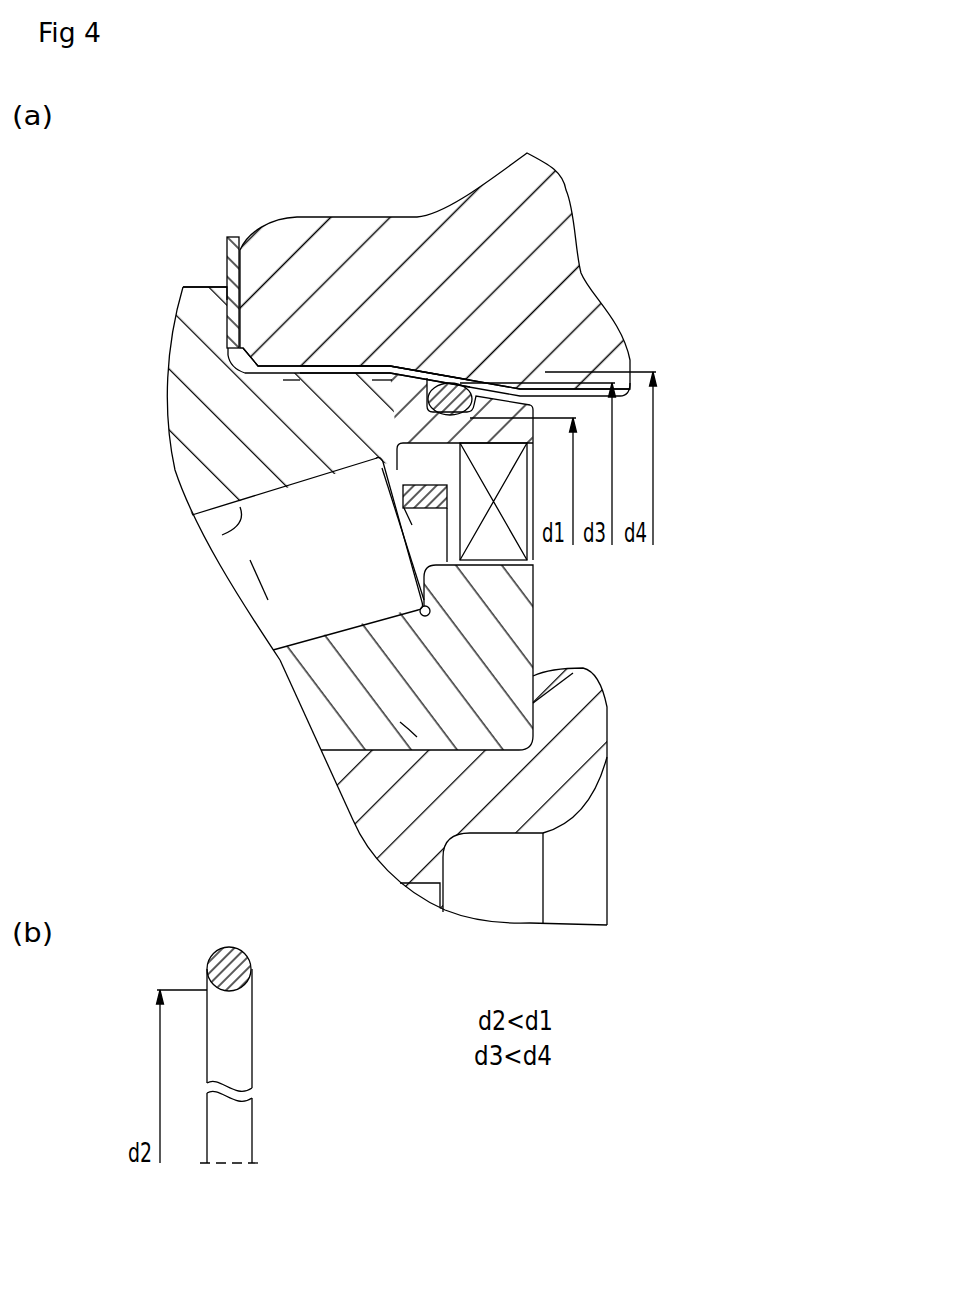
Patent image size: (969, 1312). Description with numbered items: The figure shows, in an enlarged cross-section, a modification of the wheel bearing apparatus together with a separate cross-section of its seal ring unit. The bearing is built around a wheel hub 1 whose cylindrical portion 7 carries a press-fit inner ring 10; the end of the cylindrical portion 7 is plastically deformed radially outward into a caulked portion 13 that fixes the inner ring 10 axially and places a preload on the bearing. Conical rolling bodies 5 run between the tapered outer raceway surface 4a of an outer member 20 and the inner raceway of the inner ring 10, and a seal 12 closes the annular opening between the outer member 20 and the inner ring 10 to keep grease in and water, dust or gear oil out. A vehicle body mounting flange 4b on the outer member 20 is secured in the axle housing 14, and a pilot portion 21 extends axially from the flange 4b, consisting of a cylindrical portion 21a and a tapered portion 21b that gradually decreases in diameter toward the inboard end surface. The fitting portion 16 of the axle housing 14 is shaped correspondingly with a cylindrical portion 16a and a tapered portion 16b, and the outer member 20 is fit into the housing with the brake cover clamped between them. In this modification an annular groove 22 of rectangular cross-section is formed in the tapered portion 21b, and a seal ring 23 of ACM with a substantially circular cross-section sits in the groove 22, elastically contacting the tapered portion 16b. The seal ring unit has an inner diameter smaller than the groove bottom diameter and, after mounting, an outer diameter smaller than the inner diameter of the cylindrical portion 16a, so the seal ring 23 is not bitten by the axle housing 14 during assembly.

In FIG. 4a, the wheel hub 1 is at (345, 796).
In FIG. 4a, the outer raceway surface 4a is at (222, 535).
In FIG. 4a, the vehicle body mounting flange 4b is at (190, 300).
In FIG. 4a, the rolling bodies 5 is at (258, 577).
In FIG. 4a, the cylindrical portion 7 is at (400, 722).
In FIG. 4a, the inner ring 10 is at (318, 673).
In FIG. 4a, the seal 12 is at (497, 500).
In FIG. 4a, the caulked portion 13 is at (585, 726).
In FIG. 4a, the axle housing 14 is at (517, 237).
In FIG. 4a, the fitting portion 16 is at (418, 147).
In FIG. 4a, the cylindrical portion 16a is at (358, 369).
In FIG. 4a, the tapered portion 16b is at (409, 372).
In FIG. 4a, the outer member 20 is at (195, 430).
In FIG. 4a, the pilot portion 21 is at (369, 522).
In FIG. 4a, the cylindrical portion 21a is at (298, 380).
In FIG. 4a, the tapered portion 21b is at (390, 380).
In FIG. 4a, the annular groove 22 is at (463, 420).
In FIG. 4a, the seal ring 23 is at (452, 392).
In FIG. 4b, the seal ring 23 is at (228, 965).